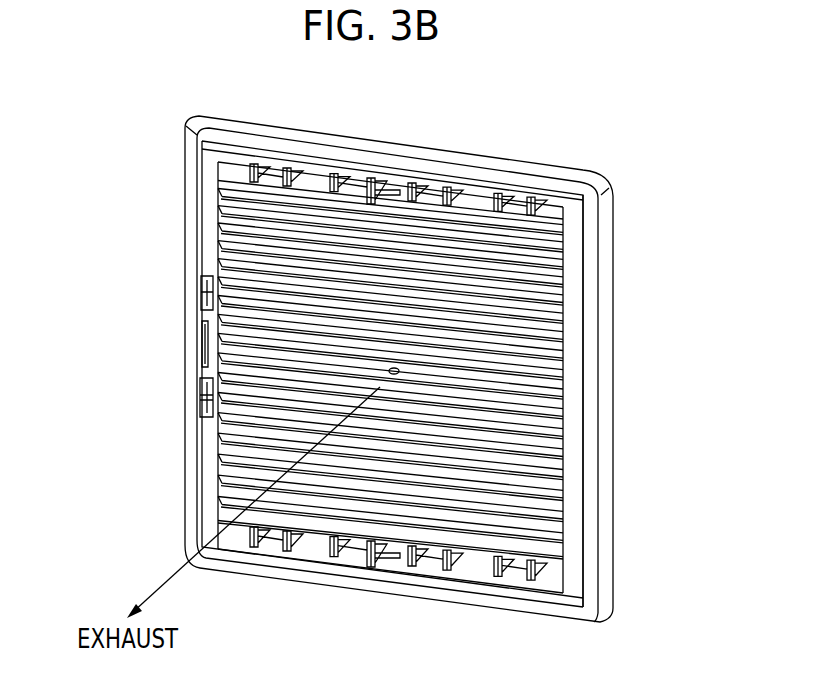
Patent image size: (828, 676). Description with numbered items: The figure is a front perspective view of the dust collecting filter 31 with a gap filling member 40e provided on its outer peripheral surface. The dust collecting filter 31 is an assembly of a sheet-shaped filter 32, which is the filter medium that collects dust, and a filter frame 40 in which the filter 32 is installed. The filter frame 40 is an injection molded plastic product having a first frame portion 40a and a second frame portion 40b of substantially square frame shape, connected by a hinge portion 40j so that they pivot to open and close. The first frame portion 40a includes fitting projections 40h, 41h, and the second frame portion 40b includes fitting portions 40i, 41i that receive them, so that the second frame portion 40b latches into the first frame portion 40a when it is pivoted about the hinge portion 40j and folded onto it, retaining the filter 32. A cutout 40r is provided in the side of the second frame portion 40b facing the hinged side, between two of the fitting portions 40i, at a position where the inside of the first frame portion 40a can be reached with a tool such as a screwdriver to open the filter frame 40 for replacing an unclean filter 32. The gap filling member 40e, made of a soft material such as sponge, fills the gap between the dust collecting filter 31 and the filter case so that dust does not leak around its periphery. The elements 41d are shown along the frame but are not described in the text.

The dust collecting filter 31 is at (476, 128).
The filter 32 is at (565, 312).
The filter frame 40 is at (298, 371).
The first frame portion 40a is at (196, 177).
The second frame portion 40b is at (210, 483).
The gap filling member 40e is at (188, 420).
The fitting projection 40h is at (199, 293).
The fitting portion 40i is at (206, 346).
The cutout 40r is at (203, 336).
The hinge portion 40j is at (585, 443).
The engaging claw 41d is at (268, 165).
The fitting projection 41h is at (397, 178).
The fitting portion 41i is at (369, 372).